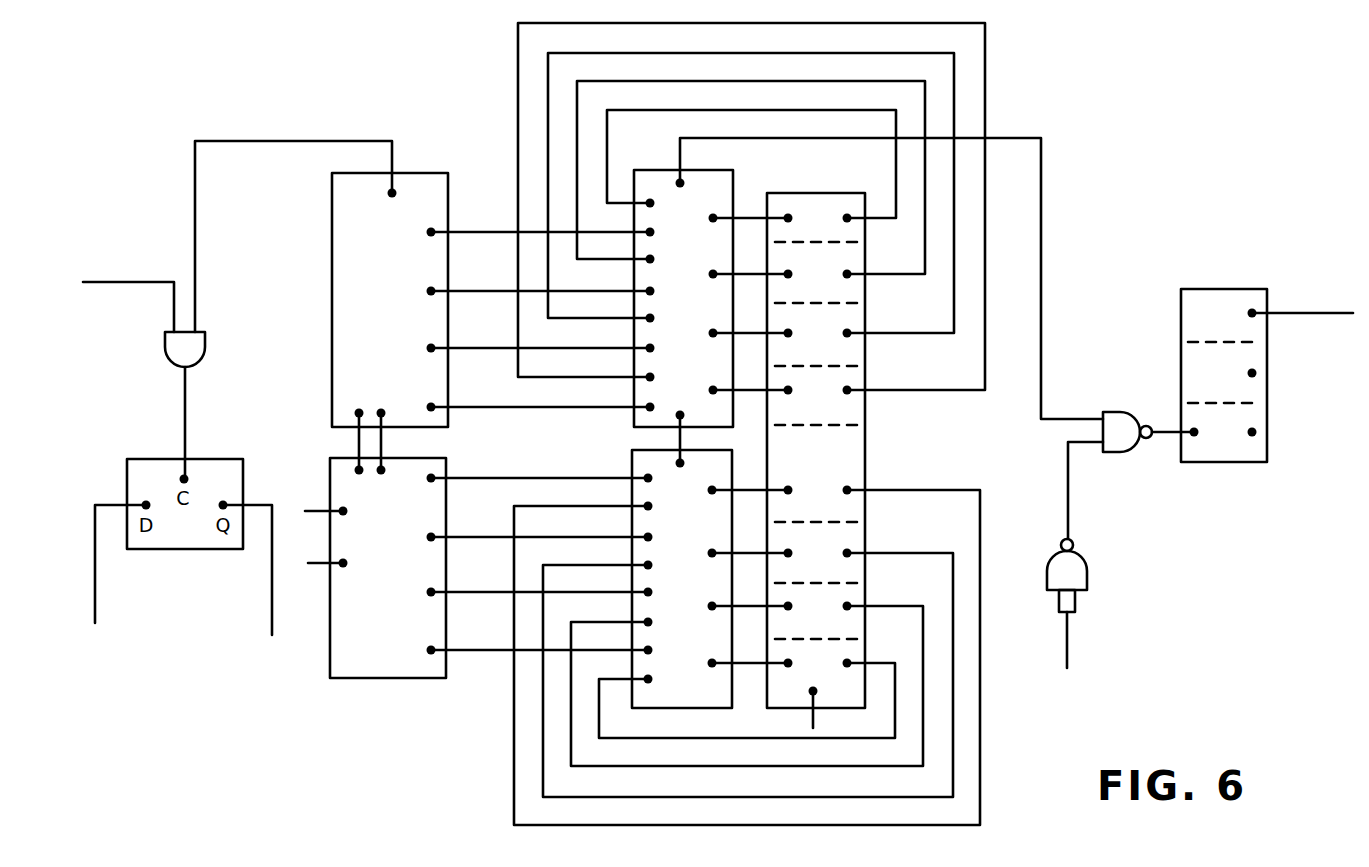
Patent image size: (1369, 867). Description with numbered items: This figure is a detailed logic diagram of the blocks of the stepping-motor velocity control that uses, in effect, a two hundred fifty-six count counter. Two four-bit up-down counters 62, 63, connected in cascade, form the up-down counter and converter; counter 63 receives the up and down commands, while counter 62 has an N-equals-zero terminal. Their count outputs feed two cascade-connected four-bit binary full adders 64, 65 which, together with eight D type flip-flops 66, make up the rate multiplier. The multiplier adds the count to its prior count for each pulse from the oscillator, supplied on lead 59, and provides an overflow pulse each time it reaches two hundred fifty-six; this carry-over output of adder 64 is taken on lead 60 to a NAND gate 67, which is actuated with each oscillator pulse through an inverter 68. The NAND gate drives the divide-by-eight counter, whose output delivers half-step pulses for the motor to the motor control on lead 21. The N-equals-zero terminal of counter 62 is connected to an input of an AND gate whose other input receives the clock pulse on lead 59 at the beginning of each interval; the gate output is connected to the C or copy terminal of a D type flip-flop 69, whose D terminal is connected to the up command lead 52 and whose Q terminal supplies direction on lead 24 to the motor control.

The lead 21 is at (1324, 312).
The lead 24 is at (272, 575).
The up command lead 52 is at (95, 578).
The lead 59 is at (122, 282).
The lead 60 is at (1041, 233).
The four bit up-down counter 62 is at (340, 316).
The four bit up-down counter 63 is at (356, 650).
The four bit binary full adder 64 is at (672, 320).
The four bit binary full adder 65 is at (670, 598).
The D type flip-flops 66 is at (835, 452).
The NAND gate 67 is at (1120, 420).
The inverter 68 is at (1080, 565).
The D type flip-flop 69 is at (172, 348).